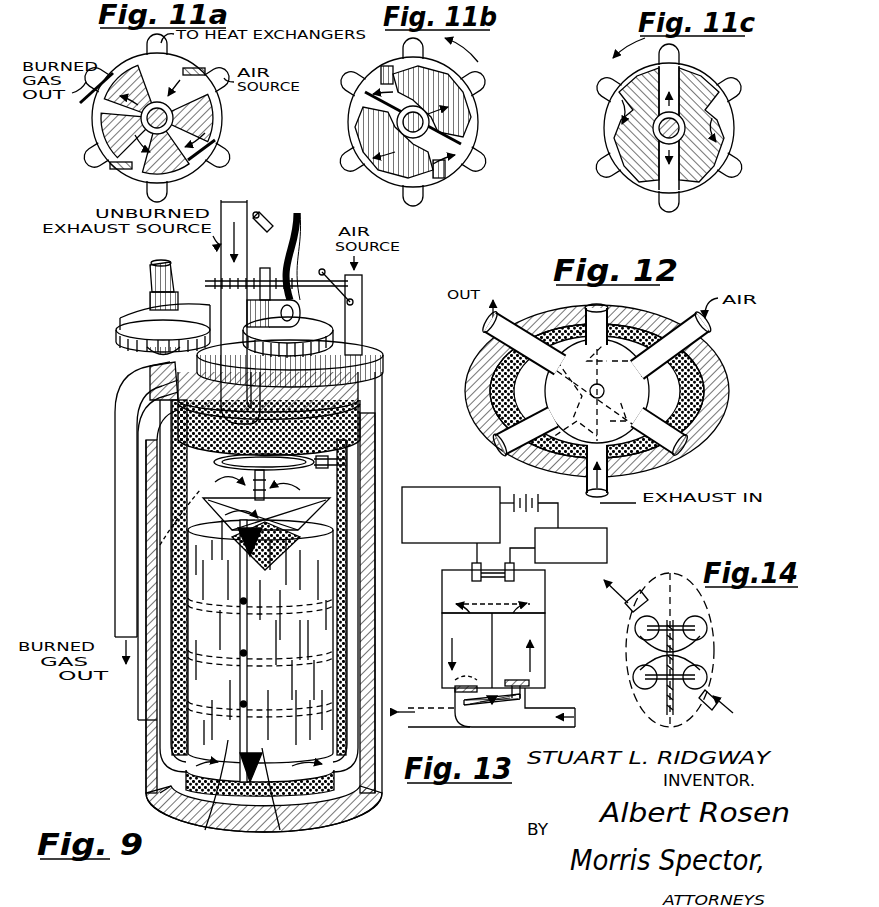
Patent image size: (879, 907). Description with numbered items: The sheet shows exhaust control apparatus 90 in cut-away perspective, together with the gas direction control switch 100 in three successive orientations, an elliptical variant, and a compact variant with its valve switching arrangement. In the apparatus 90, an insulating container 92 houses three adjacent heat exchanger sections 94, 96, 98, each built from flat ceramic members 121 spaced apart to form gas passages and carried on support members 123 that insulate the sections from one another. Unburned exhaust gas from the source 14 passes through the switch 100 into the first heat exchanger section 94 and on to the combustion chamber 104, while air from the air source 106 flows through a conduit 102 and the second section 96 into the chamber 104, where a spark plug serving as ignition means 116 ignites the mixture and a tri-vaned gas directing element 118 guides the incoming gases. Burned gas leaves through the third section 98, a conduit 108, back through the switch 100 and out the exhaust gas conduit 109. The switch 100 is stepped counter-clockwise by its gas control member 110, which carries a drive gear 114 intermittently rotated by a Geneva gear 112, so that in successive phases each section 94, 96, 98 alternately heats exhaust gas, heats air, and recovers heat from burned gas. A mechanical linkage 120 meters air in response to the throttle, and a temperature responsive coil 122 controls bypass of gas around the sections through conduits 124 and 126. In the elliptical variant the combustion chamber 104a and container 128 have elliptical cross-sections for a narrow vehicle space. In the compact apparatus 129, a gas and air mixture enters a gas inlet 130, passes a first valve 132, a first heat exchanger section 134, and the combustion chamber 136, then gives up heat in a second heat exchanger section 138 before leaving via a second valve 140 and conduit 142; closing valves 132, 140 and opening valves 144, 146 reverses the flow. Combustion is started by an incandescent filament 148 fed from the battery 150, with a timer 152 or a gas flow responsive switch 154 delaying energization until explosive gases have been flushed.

In FIG. 11A, the unburned exhaust gas source 14 is at (169, 190).
In FIG. 11B, the unburned exhaust gas source 14 is at (425, 200).
In FIG. 11C, the unburned exhaust gas source 14 is at (675, 200).
In FIG. 12, the unburned exhaust gas source 14 is at (596, 400).
In FIG. 9, the apparatus 90 is at (146, 748).
In FIG. 9, the insulating container 92 is at (320, 826).
In FIG. 9, the first heat exchanger section 94 is at (322, 492).
In FIG. 9, the second heat exchanger section 96 is at (214, 856).
In FIG. 9, the third heat exchanger section 98 is at (289, 856).
In FIG. 11A, the gas direction control switch 100 is at (92, 118).
In FIG. 11B, the gas direction control switch 100 is at (522, 121).
In FIG. 11C, the gas direction control switch 100 is at (782, 123).
In FIG. 9, the gas direction control switch 100 is at (330, 345).
In FIG. 12, the gas direction control switch 100 is at (760, 357).
In FIG. 9, the conduit 102 is at (155, 694).
In FIG. 9, the combustion chamber 104 is at (335, 460).
In FIG. 12, the combustion chamber 104a is at (784, 403).
In FIG. 11A, the air source 106 is at (220, 74).
In FIG. 11B, the air source 106 is at (474, 84).
In FIG. 11C, the air source 106 is at (738, 88).
In FIG. 9, the air source 106 is at (362, 285).
In FIG. 9, the conduit 108 is at (360, 664).
In FIG. 11A, the exhaust gas conduit 109 is at (98, 66).
In FIG. 11B, the exhaust gas conduit 109 is at (356, 76).
In FIG. 11C, the exhaust gas conduit 109 is at (600, 96).
In FIG. 9, the exhaust gas conduit 109 is at (114, 598).
In FIG. 11A, the gas control member 110 is at (240, 148).
In FIG. 11B, the gas control member 110 is at (413, 122).
In FIG. 11C, the gas control member 110 is at (669, 128).
In FIG. 9, the gas control member 110 is at (340, 345).
In FIG. 9, the Geneva gear 112 is at (125, 315).
In FIG. 9, the drive gear 114 is at (290, 310).
In FIG. 9, the ignition means 116 is at (205, 505).
In FIG. 9, the tri-vaned gas directing element 118 is at (302, 538).
In FIG. 9, the mechanical linkage 120 is at (348, 221).
In FIG. 9, the ceramic members 121 is at (216, 605).
In FIG. 9, the temperature responsive coil 122 is at (215, 470).
In FIG. 9, the support members 123 is at (233, 690).
In FIG. 9, the conduit 124 is at (248, 214).
In FIG. 9, the conduit 126 is at (158, 547).
In FIG. 12, the container 128 is at (706, 457).
In FIG. 13, the apparatus 129 is at (583, 648).
In FIG. 13, the gas inlet 130 is at (545, 708).
In FIG. 13, the first valve 132 is at (515, 680).
In FIG. 14, the first valve 132 is at (708, 678).
In FIG. 13, the first heat exchanger section 134 is at (540, 613).
In FIG. 13, the combustion chamber 136 is at (545, 578).
In FIG. 13, the second heat exchanger section 138 is at (444, 628).
In FIG. 13, the second valve 140 is at (486, 680).
In FIG. 14, the second valve 140 is at (636, 628).
In FIG. 13, the conduit 142 is at (448, 712).
In FIG. 14, the valve 144 is at (707, 629).
In FIG. 14, the valve 146 is at (634, 682).
In FIG. 13, the incandescent filament 148 is at (492, 573).
In FIG. 13, the battery 150 is at (530, 494).
In FIG. 13, the timer 152 is at (570, 528).
In FIG. 13, the gas flow responsive switch 154 is at (452, 487).